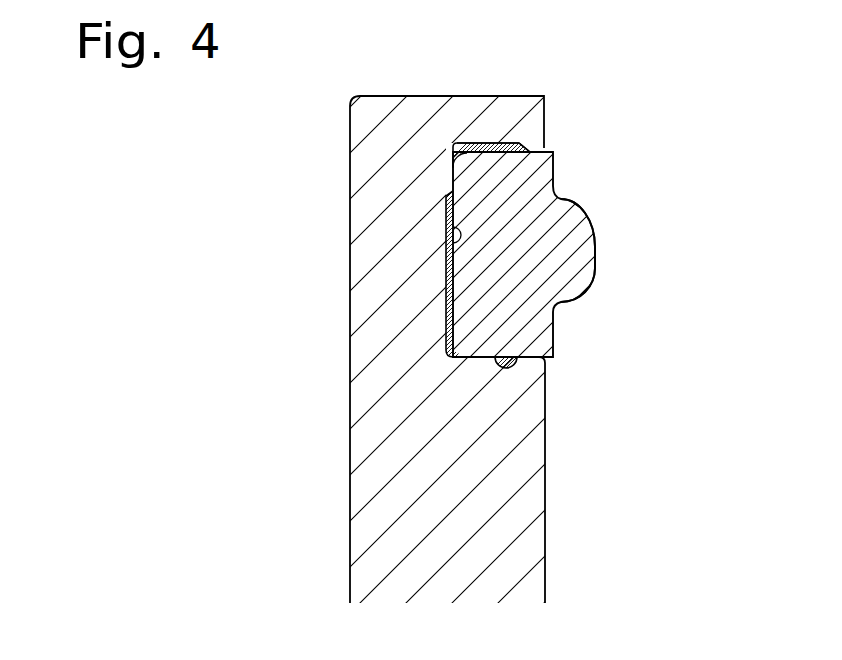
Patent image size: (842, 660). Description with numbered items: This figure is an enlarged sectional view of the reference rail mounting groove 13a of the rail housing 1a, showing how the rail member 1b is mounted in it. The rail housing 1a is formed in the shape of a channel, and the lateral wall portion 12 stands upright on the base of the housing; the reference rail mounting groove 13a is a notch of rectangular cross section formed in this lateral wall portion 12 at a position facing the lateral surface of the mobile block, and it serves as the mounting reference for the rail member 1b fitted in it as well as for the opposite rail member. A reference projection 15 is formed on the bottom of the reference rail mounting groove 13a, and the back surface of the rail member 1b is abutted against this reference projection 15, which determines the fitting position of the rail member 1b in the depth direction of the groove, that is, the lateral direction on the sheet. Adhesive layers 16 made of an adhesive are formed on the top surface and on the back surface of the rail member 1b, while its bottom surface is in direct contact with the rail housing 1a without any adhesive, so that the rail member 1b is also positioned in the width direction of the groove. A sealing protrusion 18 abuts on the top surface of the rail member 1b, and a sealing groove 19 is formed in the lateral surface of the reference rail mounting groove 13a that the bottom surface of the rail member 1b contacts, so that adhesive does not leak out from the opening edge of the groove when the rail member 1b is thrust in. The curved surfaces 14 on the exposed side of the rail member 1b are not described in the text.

The rail housing 1a is at (347, 536).
The rail member 1b is at (553, 173).
The lateral wall portion 12 is at (363, 450).
The reference rail mounting groove 13a is at (450, 227).
The curved surface 14 is at (583, 232).
The reference projection 15 is at (472, 145).
The adhesive layer 16 is at (497, 145).
The sealing protrusion 18 is at (530, 148).
The sealing groove 19 is at (513, 370).